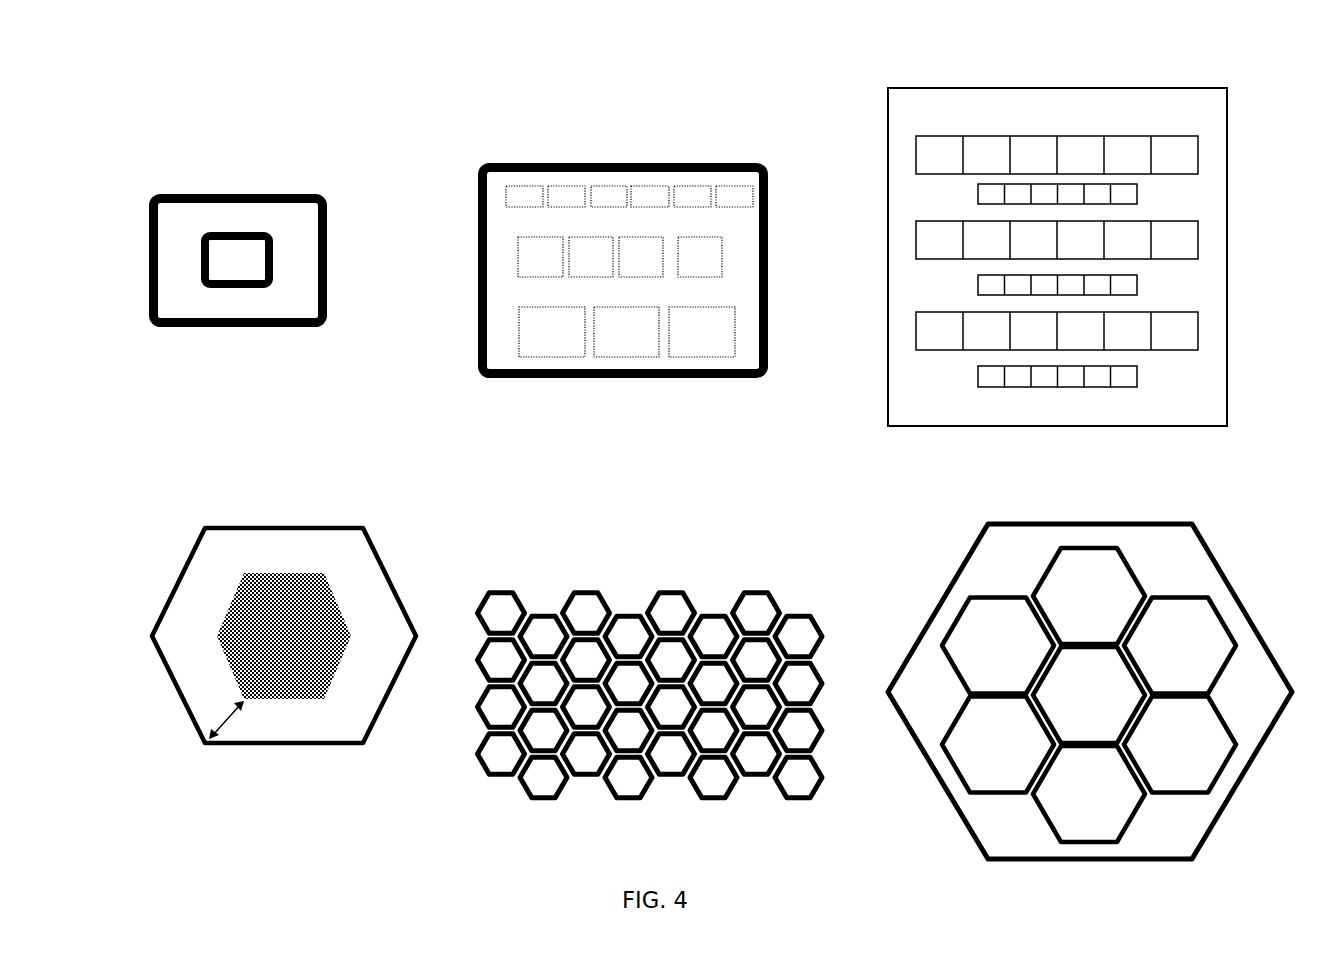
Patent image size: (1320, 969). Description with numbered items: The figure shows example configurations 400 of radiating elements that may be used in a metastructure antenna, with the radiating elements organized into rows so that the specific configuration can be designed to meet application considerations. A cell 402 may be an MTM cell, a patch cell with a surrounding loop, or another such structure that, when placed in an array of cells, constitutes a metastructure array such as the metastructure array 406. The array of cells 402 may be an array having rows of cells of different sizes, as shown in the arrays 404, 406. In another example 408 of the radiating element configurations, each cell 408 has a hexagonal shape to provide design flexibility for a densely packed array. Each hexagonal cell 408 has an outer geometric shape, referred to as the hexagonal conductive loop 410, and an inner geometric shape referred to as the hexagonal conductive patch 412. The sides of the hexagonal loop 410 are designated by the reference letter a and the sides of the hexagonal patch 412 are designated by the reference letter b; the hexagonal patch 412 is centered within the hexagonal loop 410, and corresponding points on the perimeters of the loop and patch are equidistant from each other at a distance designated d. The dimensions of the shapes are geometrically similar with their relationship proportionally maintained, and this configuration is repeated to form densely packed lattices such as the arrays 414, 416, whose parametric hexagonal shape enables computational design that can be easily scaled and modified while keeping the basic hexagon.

The set of exemplary display layouts 400 is at (205, 88).
The cell 402 is at (237, 194).
The array 404 is at (660, 164).
The metastructure array 406 is at (1067, 87).
The cell 408 is at (266, 458).
The hexagonal conductive loop 410 is at (332, 527).
The hexagonal conductive patch 412 is at (310, 662).
The array 414 is at (677, 590).
The array 416 is at (1088, 522).